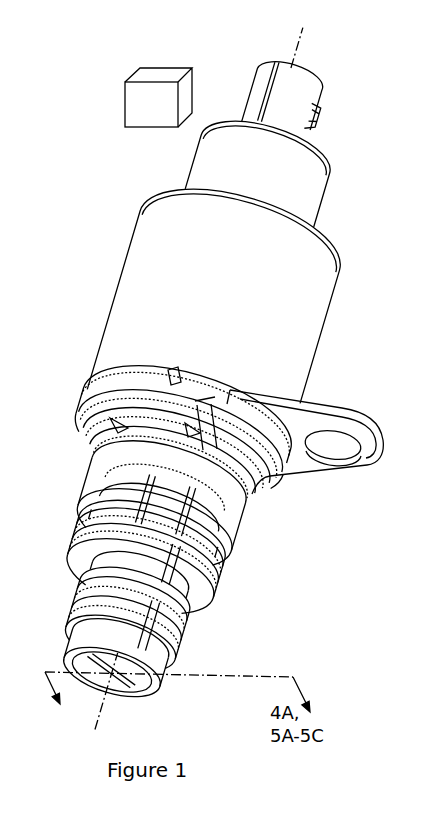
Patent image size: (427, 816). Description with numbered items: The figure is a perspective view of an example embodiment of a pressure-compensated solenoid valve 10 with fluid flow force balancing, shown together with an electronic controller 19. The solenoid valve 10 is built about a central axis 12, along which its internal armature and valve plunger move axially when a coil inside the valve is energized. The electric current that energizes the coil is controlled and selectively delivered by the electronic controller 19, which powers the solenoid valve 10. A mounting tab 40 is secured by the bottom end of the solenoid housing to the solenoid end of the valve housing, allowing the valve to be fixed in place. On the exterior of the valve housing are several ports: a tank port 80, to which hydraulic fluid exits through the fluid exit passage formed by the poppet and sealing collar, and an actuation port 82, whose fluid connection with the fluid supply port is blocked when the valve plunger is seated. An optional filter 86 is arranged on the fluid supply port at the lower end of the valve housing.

The solenoid valve 10 is at (340, 157).
The central axis 12 is at (304, 34).
The electronic controller 19 is at (247, 95).
The mounting tab 40 is at (312, 412).
The tank port 80 is at (187, 502).
The actuation port 82 is at (170, 589).
The filter 86 is at (142, 694).